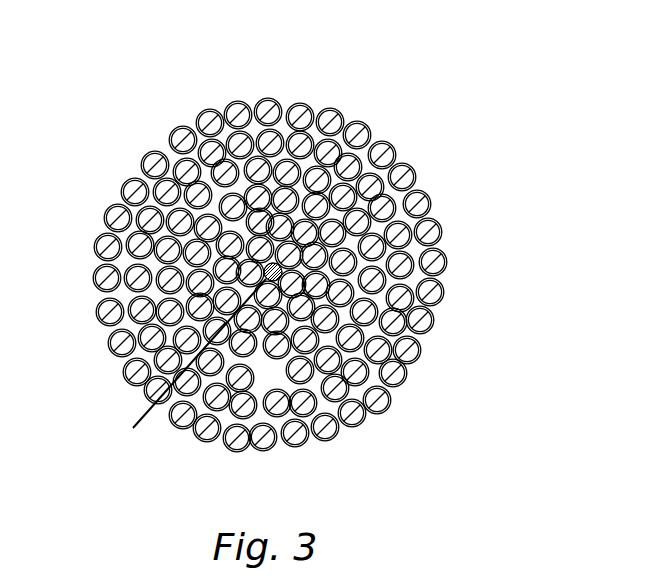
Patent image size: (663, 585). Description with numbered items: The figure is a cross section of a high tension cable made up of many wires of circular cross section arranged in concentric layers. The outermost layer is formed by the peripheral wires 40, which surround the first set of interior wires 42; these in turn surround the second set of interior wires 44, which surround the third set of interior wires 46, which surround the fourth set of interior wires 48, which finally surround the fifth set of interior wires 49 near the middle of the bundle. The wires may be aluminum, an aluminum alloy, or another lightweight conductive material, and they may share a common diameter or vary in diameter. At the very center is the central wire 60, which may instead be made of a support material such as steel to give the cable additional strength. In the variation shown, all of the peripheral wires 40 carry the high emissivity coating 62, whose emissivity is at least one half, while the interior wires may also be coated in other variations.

The peripheral wires 40 is at (152, 163).
The first set of interior wires 42 is at (115, 218).
The second set of interior wires 44 is at (178, 132).
The third set of interior wires 46 is at (257, 196).
The fourth set of interior wires 48 is at (112, 344).
The fifth set of interior wires 49 is at (278, 275).
The central wire 60 is at (186, 365).
The high emissivity coating 62 is at (360, 408).